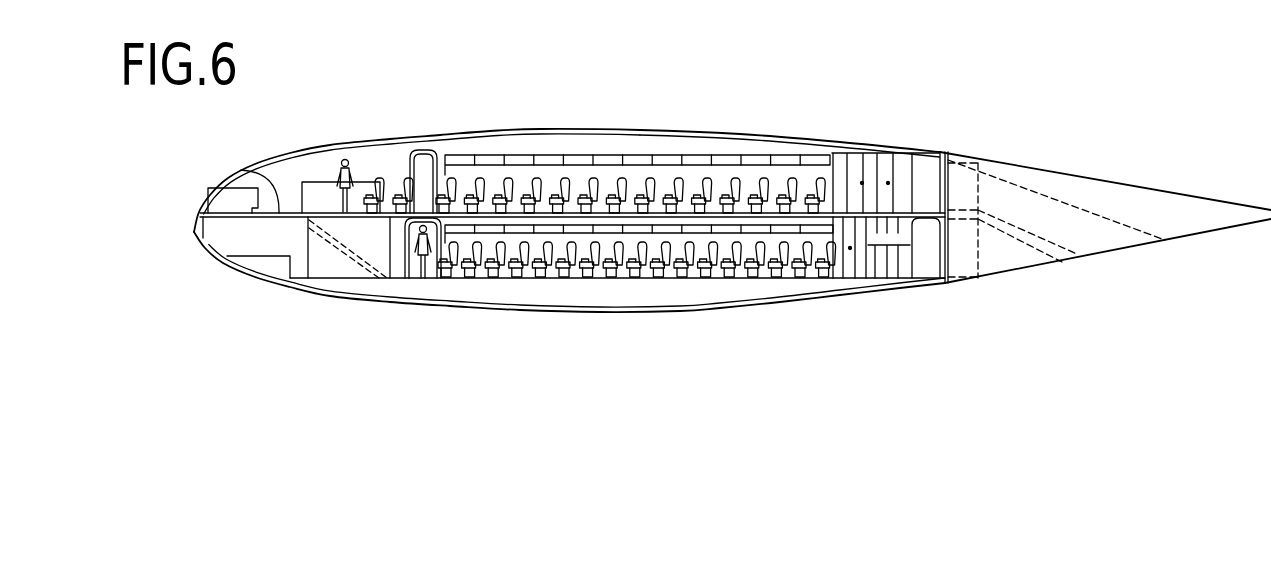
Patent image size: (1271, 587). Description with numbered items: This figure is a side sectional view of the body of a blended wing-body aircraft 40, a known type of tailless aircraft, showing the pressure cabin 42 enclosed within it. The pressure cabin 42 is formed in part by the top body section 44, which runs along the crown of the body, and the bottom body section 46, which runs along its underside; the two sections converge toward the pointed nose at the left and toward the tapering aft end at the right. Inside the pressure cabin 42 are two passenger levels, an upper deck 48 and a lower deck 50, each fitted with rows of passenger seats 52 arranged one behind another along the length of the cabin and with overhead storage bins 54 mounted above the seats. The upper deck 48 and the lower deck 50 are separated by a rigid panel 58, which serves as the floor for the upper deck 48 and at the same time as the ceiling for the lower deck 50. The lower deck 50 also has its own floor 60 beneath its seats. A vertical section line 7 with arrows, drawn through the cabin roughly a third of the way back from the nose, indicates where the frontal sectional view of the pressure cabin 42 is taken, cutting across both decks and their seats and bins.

The blended wing-body aircraft 40 is at (732, 223).
The pressure cabin 42 is at (451, 138).
The top body section 44 is at (704, 133).
The bottom body section 46 is at (661, 305).
The upper deck 48 is at (605, 178).
The lower deck 50 is at (596, 279).
The passenger seats 52 is at (792, 279).
The overhead storage bins 54 is at (759, 158).
The rigid panel 58 is at (248, 176).
The floor 60 is at (455, 279).
The section line 7— 7 is at (552, 360).